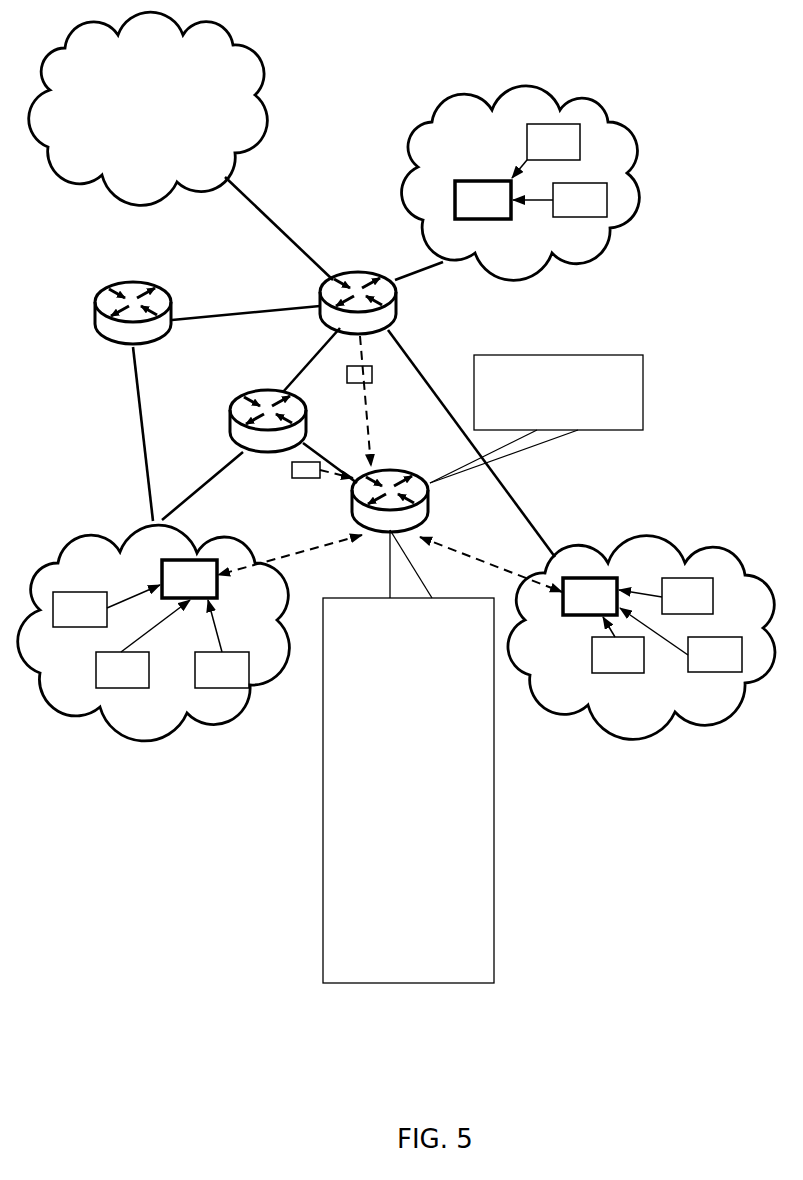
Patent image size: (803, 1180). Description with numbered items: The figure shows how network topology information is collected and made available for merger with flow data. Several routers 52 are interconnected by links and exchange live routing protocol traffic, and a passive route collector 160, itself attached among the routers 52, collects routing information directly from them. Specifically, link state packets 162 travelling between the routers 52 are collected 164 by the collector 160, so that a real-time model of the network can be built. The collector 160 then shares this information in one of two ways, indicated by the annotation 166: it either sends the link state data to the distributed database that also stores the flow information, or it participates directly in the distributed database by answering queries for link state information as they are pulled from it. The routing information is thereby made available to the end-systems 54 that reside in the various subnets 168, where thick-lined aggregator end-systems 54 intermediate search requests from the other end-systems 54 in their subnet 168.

The router 52 is at (113, 283).
The end-system 54 is at (472, 209).
The passive route collector 160 is at (473, 514).
The link state packet 162 is at (371, 383).
The collecting link state packets 164 is at (688, 378).
The send link state data / participate in distributed database step 166 is at (319, 977).
The subnet 168 is at (574, 83).